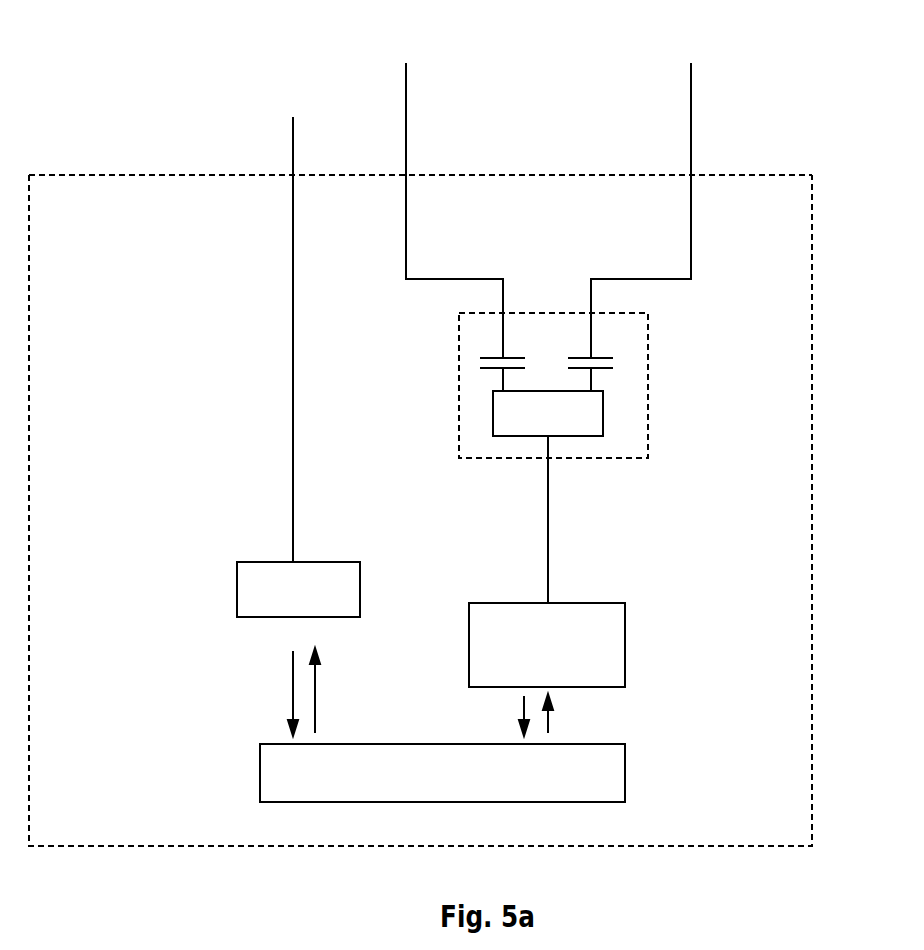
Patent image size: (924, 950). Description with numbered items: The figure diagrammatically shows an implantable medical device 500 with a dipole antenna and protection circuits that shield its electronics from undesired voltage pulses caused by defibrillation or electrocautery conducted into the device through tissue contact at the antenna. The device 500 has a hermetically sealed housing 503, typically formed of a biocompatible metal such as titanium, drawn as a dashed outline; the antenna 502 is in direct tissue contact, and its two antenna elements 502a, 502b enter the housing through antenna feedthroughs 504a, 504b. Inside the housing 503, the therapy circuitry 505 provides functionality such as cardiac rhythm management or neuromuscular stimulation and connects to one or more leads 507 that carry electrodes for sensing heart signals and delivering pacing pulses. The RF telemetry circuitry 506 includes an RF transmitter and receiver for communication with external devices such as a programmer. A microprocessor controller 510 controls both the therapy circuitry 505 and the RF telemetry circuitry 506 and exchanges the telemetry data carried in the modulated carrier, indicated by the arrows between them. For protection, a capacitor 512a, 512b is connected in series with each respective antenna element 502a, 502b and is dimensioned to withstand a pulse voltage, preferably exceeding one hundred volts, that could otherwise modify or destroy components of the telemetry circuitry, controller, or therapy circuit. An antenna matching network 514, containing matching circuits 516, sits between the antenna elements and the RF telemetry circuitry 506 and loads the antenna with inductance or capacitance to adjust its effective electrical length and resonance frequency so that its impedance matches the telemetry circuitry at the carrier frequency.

The implantable medical device 500 is at (806, 148).
The antenna 502 is at (559, 105).
The antenna element 502a is at (404, 82).
The antenna element 502b is at (690, 74).
The hermetically sealed housing 503 is at (76, 173).
The antenna feedthrough 504a is at (406, 174).
The antenna feedthrough 504b is at (690, 176).
The therapy circuitry 505 is at (236, 583).
The RF telemetry circuitry 506 is at (468, 644).
The lead 507 is at (292, 392).
The microprocessor controller 510 is at (258, 776).
The capacitor 512a is at (490, 374).
The capacitor 512b is at (594, 356).
The antenna matching network 514 is at (535, 393).
The matching circuit 516 is at (604, 406).